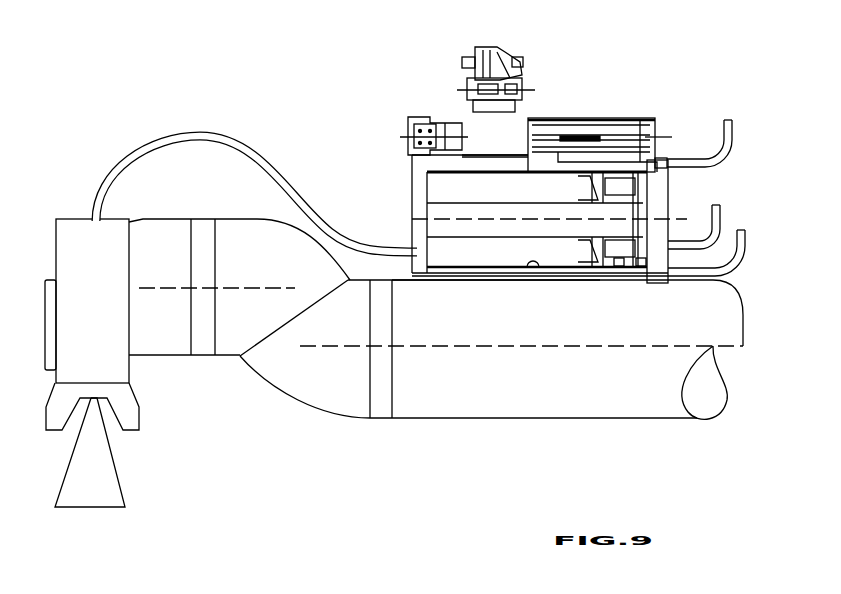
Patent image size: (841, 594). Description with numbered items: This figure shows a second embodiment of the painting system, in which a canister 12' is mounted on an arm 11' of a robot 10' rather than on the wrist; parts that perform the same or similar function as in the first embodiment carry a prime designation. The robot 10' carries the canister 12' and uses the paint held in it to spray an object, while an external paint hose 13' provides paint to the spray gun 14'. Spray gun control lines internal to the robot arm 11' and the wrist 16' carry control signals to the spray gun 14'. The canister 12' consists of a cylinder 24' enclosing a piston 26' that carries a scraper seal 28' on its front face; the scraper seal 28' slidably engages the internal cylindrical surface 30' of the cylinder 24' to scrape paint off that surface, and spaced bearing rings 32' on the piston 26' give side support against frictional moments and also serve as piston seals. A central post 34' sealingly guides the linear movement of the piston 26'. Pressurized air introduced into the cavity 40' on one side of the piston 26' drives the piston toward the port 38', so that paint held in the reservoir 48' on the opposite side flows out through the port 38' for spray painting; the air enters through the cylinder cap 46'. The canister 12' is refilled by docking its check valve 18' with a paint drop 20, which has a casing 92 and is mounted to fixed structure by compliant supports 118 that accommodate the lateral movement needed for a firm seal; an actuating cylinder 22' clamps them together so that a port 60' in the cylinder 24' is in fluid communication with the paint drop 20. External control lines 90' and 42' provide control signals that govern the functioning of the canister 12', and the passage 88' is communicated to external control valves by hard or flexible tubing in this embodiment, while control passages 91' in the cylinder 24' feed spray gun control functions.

The robot 10' is at (448, 391).
The robot arm 11' is at (521, 389).
The canister 12' is at (518, 113).
The external paint hose 13' is at (256, 158).
The spray gun 14' is at (126, 363).
The wrist 16' is at (301, 356).
The check valve 18' is at (431, 101).
The paint drop 20 is at (485, 35).
The actuating cylinder 22' is at (600, 120).
The cylinder 24' is at (540, 247).
The piston 26' is at (605, 288).
The scraper seal 28' is at (584, 240).
The internal cylindrical surface 30' is at (520, 284).
The bearing rings 32' is at (549, 208).
The central post 34' is at (593, 259).
The port 38' is at (476, 291).
The cavity 40' is at (635, 240).
The control line 42' is at (713, 210).
The cylinder cap 46' is at (696, 250).
The reservoir 48' is at (398, 217).
The port 60' is at (537, 186).
The passage 88' is at (637, 120).
The control line 90' is at (713, 144).
The control passages 91' is at (573, 307).
The casing 92 is at (508, 150).
The supports 118 is at (475, 57).